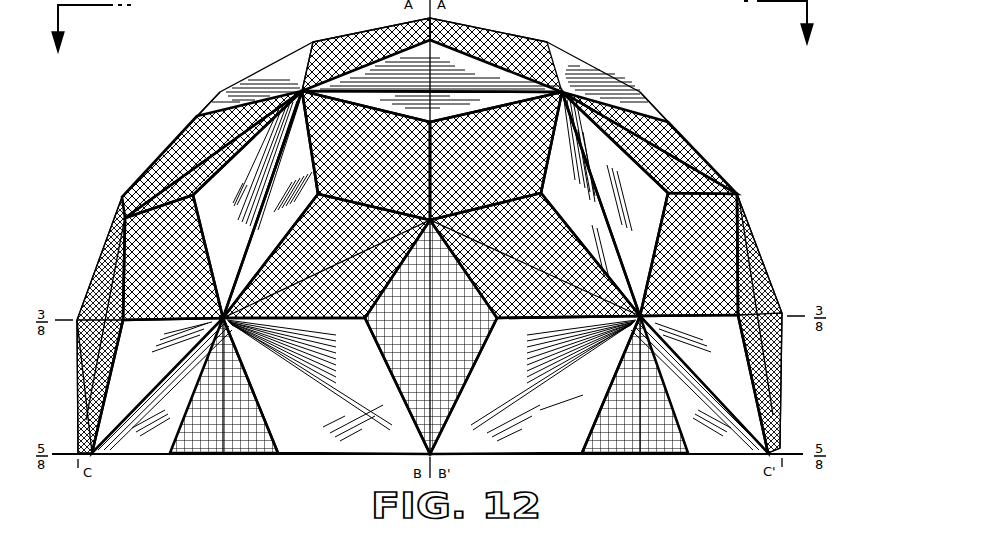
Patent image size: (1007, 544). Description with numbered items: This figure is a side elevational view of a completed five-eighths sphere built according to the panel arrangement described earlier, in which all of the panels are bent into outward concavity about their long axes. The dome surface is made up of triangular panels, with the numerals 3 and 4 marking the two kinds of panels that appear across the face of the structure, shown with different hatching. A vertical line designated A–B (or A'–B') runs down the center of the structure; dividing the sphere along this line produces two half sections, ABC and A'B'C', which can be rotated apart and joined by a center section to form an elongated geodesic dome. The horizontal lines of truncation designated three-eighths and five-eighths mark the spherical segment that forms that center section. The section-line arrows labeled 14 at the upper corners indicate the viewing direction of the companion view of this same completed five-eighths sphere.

The hatched triangular panel 3 is at (444, 367).
The plain triangular panel 4 is at (483, 82).
The section line of FIG. 14 is at (433, 43).